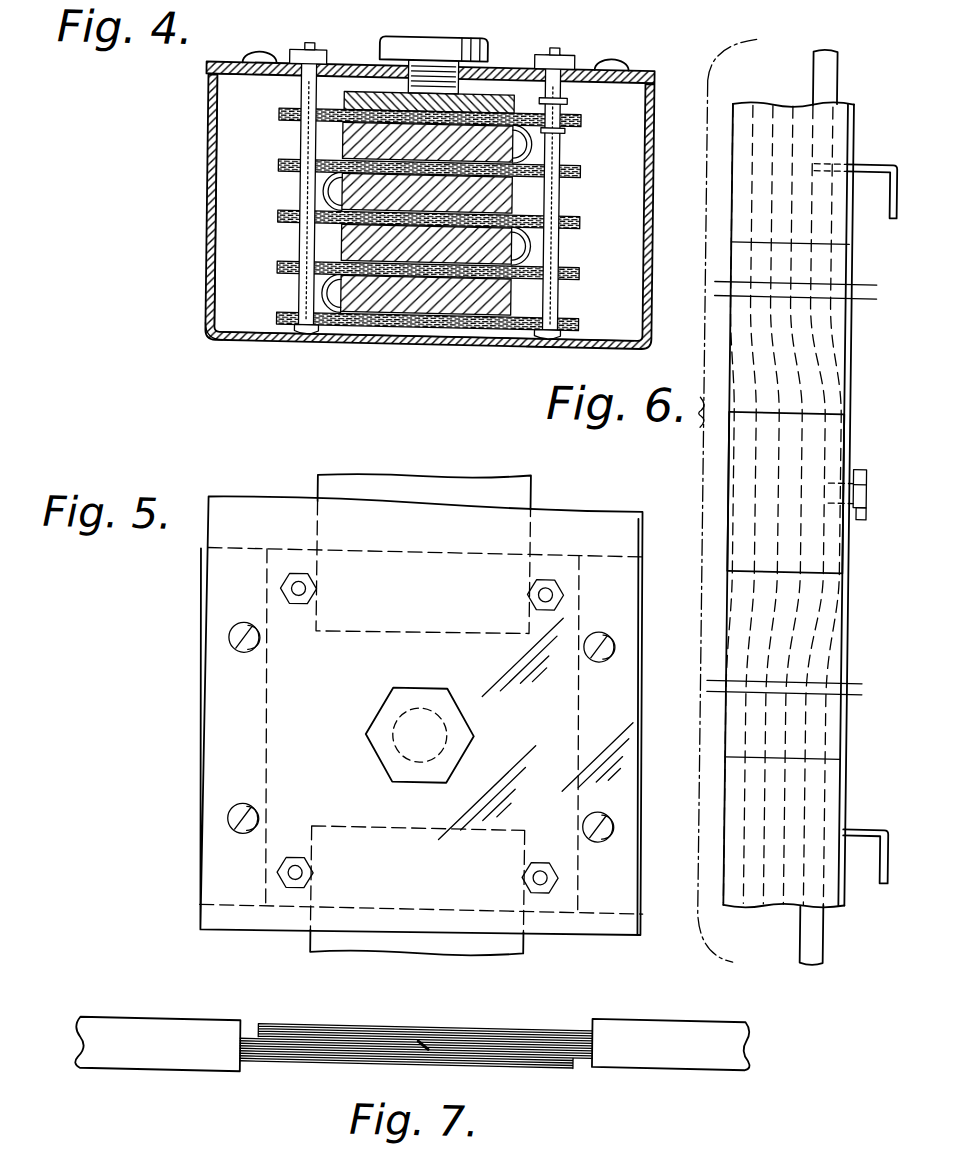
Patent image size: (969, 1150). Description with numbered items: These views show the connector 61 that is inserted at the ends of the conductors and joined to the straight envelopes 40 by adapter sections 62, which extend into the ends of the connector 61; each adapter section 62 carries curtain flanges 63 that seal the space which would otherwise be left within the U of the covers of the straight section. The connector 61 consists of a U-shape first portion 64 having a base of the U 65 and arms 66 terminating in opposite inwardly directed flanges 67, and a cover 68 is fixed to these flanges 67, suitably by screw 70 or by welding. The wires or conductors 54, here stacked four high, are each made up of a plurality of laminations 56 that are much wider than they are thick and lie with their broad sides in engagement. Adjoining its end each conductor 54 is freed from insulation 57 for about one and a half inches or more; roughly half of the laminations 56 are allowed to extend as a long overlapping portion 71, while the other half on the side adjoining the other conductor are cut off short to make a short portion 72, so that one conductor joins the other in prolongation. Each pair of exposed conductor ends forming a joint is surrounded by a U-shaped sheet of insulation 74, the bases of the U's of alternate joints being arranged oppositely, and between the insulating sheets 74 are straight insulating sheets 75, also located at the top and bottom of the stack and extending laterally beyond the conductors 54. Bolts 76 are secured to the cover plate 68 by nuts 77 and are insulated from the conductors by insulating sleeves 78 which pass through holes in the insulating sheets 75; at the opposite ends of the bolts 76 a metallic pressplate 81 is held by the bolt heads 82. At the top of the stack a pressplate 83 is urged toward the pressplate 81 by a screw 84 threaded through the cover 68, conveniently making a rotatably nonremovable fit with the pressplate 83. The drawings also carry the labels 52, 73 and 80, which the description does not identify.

In FIG. 6, the straight envelope 40 is at (726, 156).
In FIG. 6, the mounting hook 52 is at (867, 146).
In FIG. 4, the wire or conductor 54 is at (340, 139).
In FIG. 7, the laminations 56 is at (553, 1022).
In FIG. 7, the insulation 57 is at (665, 1018).
In FIG. 4, the connector 61 is at (207, 198).
In FIG. 5, the connector 61 is at (200, 724).
In FIG. 6, the connector 61 is at (839, 440).
In FIG. 6, the adapter section 62 is at (838, 337).
In FIG. 6, the curtain flanges 63 is at (843, 247).
In FIG. 4, the U-shape first portion 64 is at (238, 336).
In FIG. 5, the U-shape first portion 64 is at (200, 806).
In FIG. 6, the U-shape first portion 64 is at (750, 484).
In FIG. 4, the base of the U 65 is at (382, 332).
In FIG. 4, the arms 66 is at (207, 137).
In FIG. 5, the arms 66 is at (200, 776).
In FIG. 4, the inwardly directed flanges 67 is at (240, 72).
In FIG. 5, the inwardly directed flanges 67 is at (215, 866).
In FIG. 4, the cover 68 is at (492, 57).
In FIG. 5, the cover 68 is at (222, 673).
In FIG. 4, the screw 70 is at (258, 46).
In FIG. 5, the screw 70 is at (228, 627).
In FIG. 7, the long overlapping portion 71 is at (337, 1024).
In FIG. 7, the short portion 72 is at (382, 1036).
In FIG. 7, the splice 73 is at (426, 1034).
In FIG. 4, the U-shaped sheet of insulation 74 is at (533, 231).
In FIG. 4, the straight insulating sheets 75 is at (578, 159).
In FIG. 4, the bolts 76 is at (565, 44).
In FIG. 5, the bolts 76 is at (548, 576).
In FIG. 4, the nuts 77 is at (318, 46).
In FIG. 4, the insulating sleeves 78 is at (567, 91).
In FIG. 4, the spacer 80 is at (565, 118).
In FIG. 4, the metallic pressplate 81 is at (578, 317).
In FIG. 4, the bolt heads 82 is at (550, 327).
In FIG. 4, the pressplate 83 is at (480, 90).
In FIG. 4, the screw 84 is at (470, 27).
In FIG. 5, the screw 84 is at (457, 659).
In FIG. 6, the screw 84 is at (862, 503).